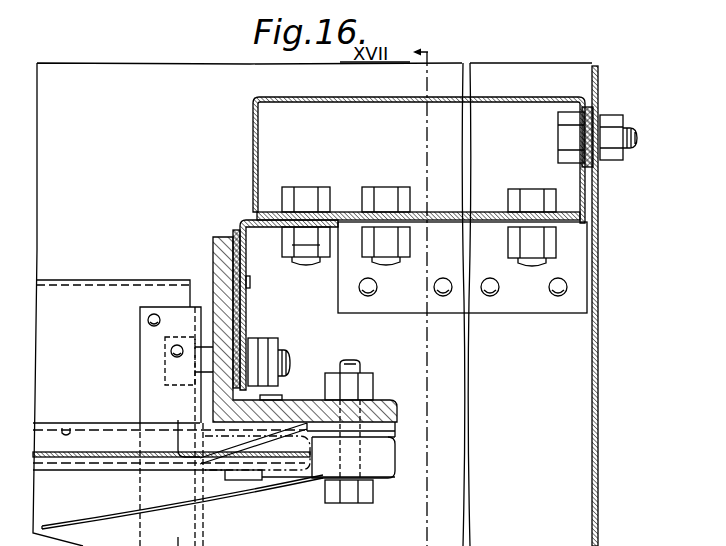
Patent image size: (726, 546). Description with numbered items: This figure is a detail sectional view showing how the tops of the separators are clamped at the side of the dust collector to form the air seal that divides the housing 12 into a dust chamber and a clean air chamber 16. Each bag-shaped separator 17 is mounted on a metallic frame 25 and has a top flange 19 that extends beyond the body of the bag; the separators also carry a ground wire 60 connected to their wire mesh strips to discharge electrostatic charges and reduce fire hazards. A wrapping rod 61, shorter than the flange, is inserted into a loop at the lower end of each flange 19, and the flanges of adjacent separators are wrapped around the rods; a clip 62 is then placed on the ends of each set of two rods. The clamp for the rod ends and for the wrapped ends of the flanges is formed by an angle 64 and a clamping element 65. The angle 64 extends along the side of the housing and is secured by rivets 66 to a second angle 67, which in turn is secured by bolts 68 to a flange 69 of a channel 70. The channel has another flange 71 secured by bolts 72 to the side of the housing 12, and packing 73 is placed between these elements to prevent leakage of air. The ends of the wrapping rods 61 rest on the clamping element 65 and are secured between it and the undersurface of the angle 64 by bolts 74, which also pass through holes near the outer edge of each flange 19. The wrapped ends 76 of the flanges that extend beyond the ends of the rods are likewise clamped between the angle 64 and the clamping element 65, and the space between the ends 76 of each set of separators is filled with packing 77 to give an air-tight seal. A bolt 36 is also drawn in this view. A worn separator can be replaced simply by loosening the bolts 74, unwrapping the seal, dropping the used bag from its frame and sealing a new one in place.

The housing 12 is at (598, 365).
The clean air chamber 16 is at (103, 140).
The separator 17 is at (178, 537).
The flange 19 is at (100, 452).
The frame 25 is at (60, 296).
The bolt 36 is at (292, 346).
The ground wire 60 is at (84, 525).
The wrapping rod 61 is at (62, 428).
The clip 62 is at (190, 420).
The angle 64 is at (213, 256).
The clamping element 65 is at (385, 456).
The rivet 66 is at (250, 286).
The angle 67 is at (289, 305).
The bolt 68 is at (303, 268).
The flange 69 is at (303, 205).
The channel 70 is at (311, 97).
The flange 71 is at (558, 123).
The bolt 72 is at (637, 137).
The packing 73 is at (240, 233).
The bolt 74 is at (347, 371).
The wrapped end 76 is at (383, 418).
The packing 77 is at (396, 428).